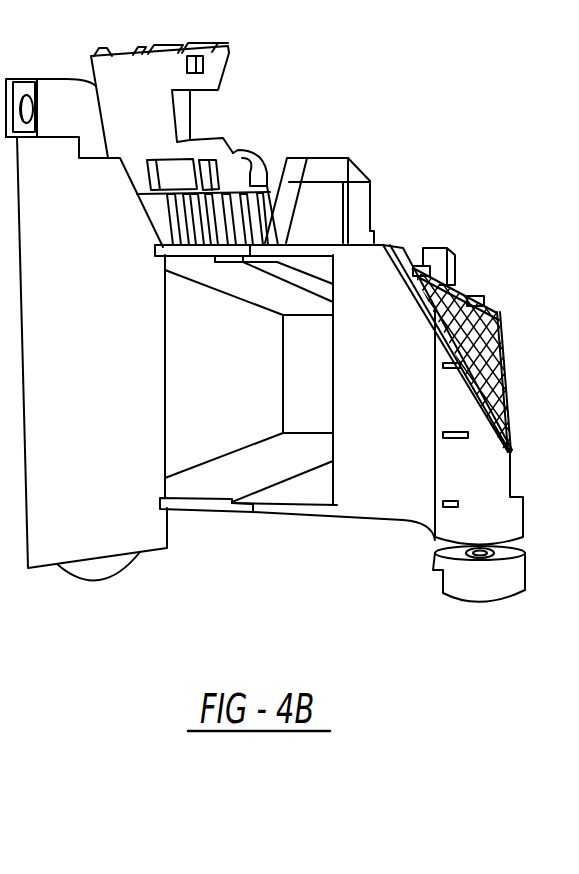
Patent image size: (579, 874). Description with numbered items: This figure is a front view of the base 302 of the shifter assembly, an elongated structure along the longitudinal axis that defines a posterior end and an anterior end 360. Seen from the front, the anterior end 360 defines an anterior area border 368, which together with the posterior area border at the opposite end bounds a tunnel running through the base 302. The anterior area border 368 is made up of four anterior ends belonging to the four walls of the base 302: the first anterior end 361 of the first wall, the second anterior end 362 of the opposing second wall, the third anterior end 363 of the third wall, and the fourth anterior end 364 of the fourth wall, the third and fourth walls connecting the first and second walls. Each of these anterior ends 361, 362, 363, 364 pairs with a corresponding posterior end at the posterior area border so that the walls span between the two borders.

The base 302 is at (282, 352).
The anterior end 360 is at (308, 489).
The first anterior end 361 is at (397, 370).
The second anterior end 362 is at (140, 349).
The third anterior end 363 is at (284, 243).
The fourth anterior end 364 is at (203, 505).
The anterior area border 368 is at (352, 453).